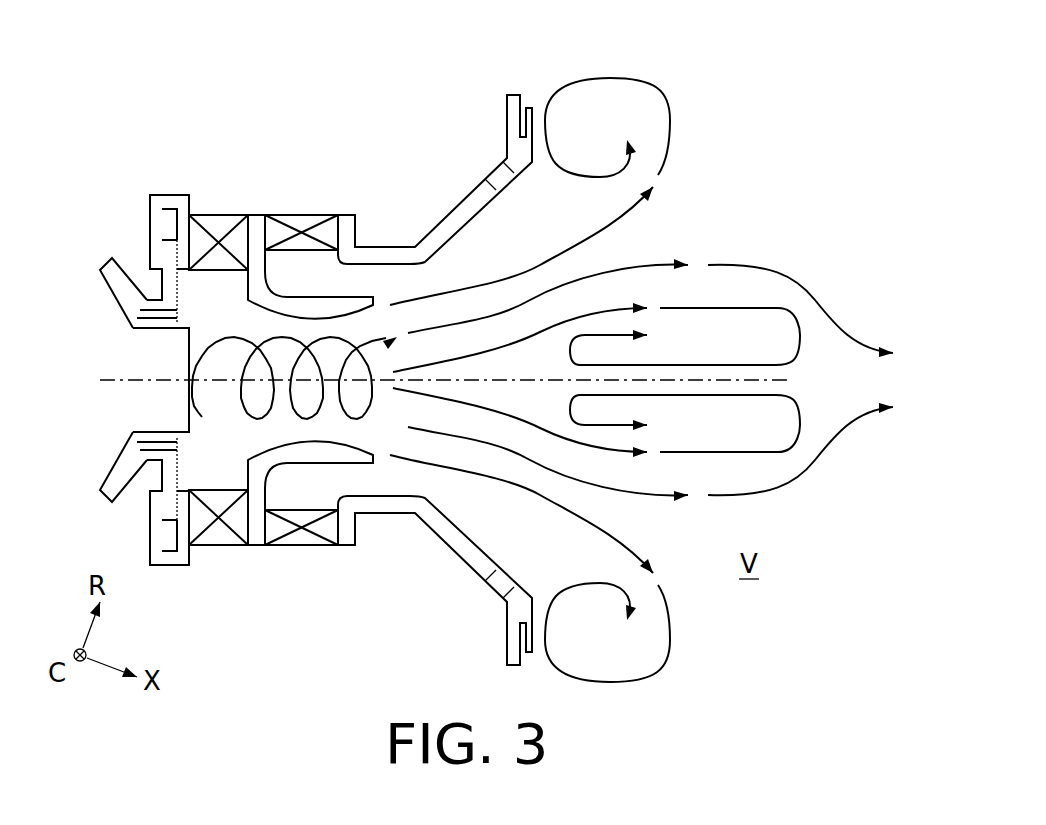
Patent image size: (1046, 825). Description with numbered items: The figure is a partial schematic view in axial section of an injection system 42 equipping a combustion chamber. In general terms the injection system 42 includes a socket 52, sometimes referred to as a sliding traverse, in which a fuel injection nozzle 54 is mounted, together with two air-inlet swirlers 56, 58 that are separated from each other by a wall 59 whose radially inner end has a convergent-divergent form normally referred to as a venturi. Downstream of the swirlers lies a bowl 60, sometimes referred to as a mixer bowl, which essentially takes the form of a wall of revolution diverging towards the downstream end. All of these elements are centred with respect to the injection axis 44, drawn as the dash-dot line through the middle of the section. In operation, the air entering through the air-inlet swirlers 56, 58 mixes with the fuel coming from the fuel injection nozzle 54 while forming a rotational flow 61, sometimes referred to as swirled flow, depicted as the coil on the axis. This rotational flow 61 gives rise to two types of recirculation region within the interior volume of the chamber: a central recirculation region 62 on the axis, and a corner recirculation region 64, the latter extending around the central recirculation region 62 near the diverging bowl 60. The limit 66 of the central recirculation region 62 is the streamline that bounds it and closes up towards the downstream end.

The injection system 42 is at (152, 108).
The injection axis 44 is at (143, 378).
The socket 52 is at (123, 457).
The fuel injection nozzle 54 is at (190, 413).
The air-inlet swirler 56 is at (218, 222).
The air-inlet swirler 58 is at (302, 225).
The wall 59 is at (357, 430).
The bowl 60 is at (447, 213).
The rotational flow 61 is at (300, 397).
The central recirculation region 62 is at (712, 338).
The corner recirculation region 64 is at (610, 115).
The limit of the central recirculation region 66 is at (727, 263).